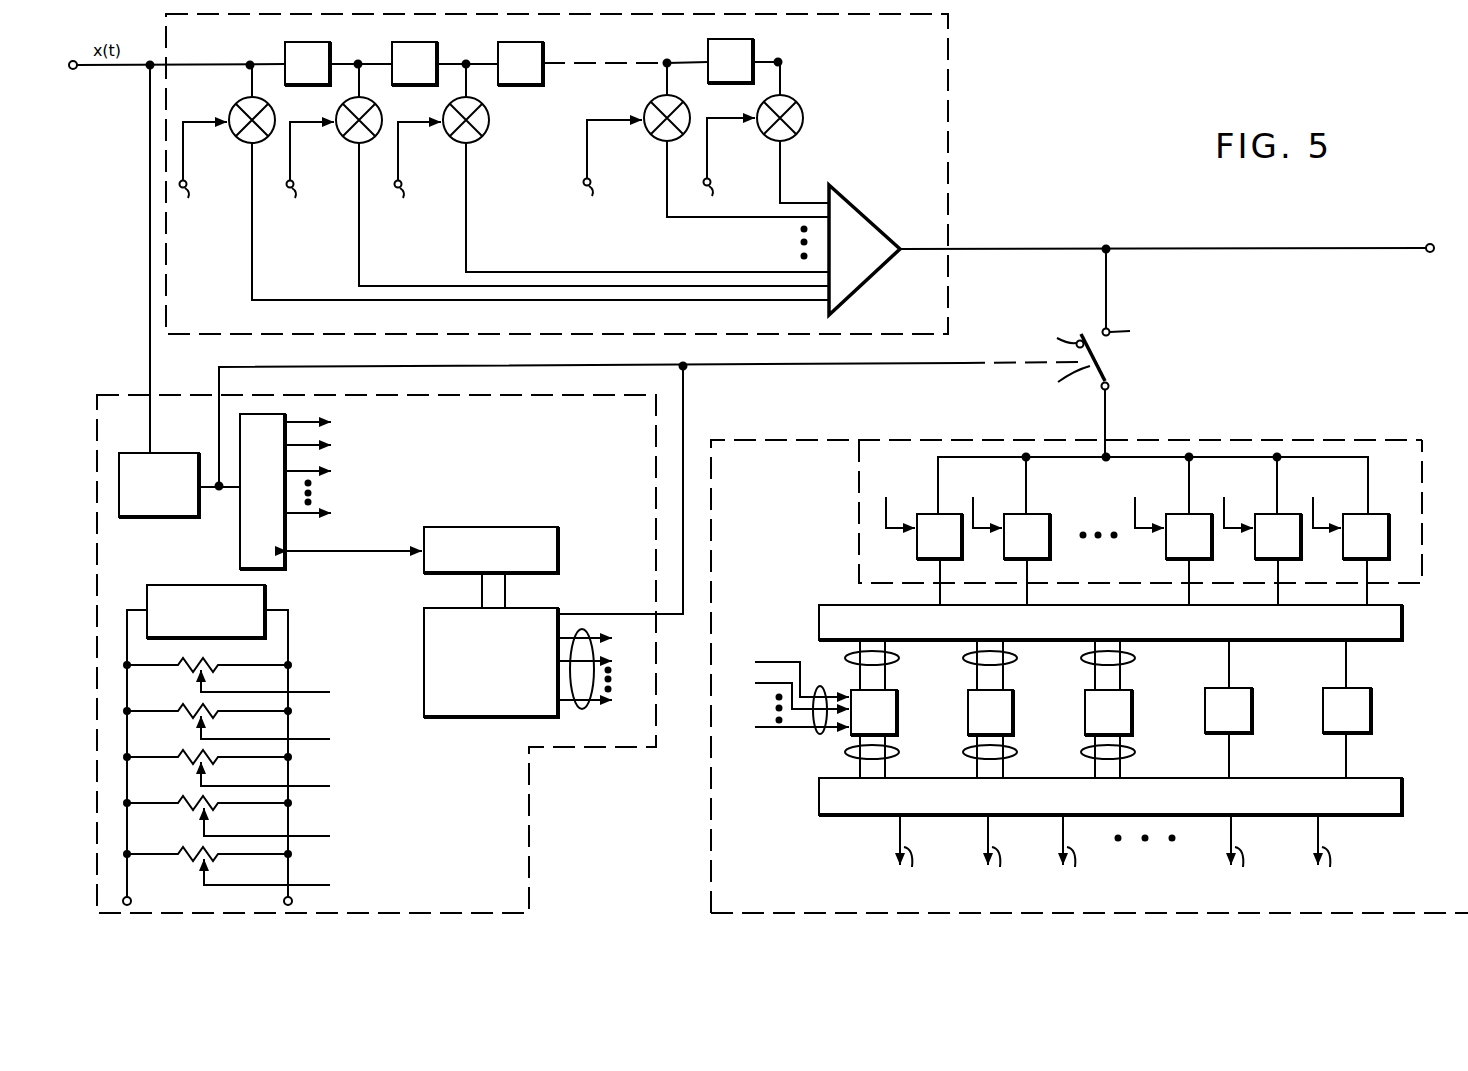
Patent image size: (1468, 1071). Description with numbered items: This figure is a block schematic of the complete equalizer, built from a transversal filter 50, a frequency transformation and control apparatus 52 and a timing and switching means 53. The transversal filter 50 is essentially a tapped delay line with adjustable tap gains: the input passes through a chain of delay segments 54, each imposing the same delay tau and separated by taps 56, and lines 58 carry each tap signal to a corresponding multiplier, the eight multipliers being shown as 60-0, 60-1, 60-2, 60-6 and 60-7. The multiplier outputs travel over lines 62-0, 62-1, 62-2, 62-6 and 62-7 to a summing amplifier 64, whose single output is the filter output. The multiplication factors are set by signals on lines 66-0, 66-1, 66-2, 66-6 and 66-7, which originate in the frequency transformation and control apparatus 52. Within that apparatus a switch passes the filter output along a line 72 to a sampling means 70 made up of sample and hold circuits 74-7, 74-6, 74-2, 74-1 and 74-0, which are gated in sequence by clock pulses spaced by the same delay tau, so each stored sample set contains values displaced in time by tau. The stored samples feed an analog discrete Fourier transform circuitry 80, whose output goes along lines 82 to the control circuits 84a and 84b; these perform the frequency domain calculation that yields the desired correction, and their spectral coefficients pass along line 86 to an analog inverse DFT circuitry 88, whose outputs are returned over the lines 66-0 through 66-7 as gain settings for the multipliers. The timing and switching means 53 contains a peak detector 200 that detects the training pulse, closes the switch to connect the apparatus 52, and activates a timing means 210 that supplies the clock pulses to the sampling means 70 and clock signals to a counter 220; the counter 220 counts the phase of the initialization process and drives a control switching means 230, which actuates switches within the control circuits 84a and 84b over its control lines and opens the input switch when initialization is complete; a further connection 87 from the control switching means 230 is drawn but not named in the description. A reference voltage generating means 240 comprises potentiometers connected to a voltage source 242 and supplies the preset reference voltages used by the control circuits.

The transversal filter 50 is at (952, 90).
The frequency transformation and control apparatus 52 is at (709, 853).
The timing and switching means 53 is at (532, 807).
The delay segment 54 is at (290, 43).
The tap 56 is at (248, 62).
The line 58 is at (250, 80).
The multiplier 60-0 is at (234, 134).
The multiplier 60-1 is at (340, 134).
The multiplier 60-2 is at (449, 134).
The multiplier 60-6 is at (650, 132).
The multiplier 60-7 is at (764, 132).
The line 62-0 is at (251, 261).
The line 62-1 is at (358, 256).
The line 62-2 is at (466, 255).
The line 62-6 is at (668, 220).
The line 62-7 is at (783, 167).
The summing amplifier 64 is at (868, 222).
The line 66-0 is at (551, 539).
The line 66-1 is at (639, 539).
The line 66-2 is at (735, 539).
The line 66-6 is at (905, 537).
The line 66-7 is at (1013, 537).
The sampling means 70 is at (856, 533).
The line 72 is at (1108, 410).
The sample and hold circuit 74-0 is at (1355, 543).
The sample and hold circuit 74-1 is at (1265, 543).
The sample and hold circuit 74-2 is at (1172, 543).
The sample and hold circuit 74-6 is at (1015, 540).
The sample and hold circuit 74-7 is at (927, 540).
The analog discrete Fourier transform circuitry 80 is at (1380, 620).
The line 82 is at (900, 659).
The control circuit 84a is at (885, 722).
The control circuit 84b is at (1335, 700).
The line 86 is at (963, 752).
The control lead 87 is at (614, 614).
The analog IDFT circuitry 88 is at (1385, 795).
The peak detector 200 is at (182, 455).
The timing means 210 is at (240, 531).
The counter 220 is at (540, 527).
The control switching means 230 is at (424, 630).
The reference voltage generating means 240 is at (395, 868).
The voltage source 242 is at (213, 585).